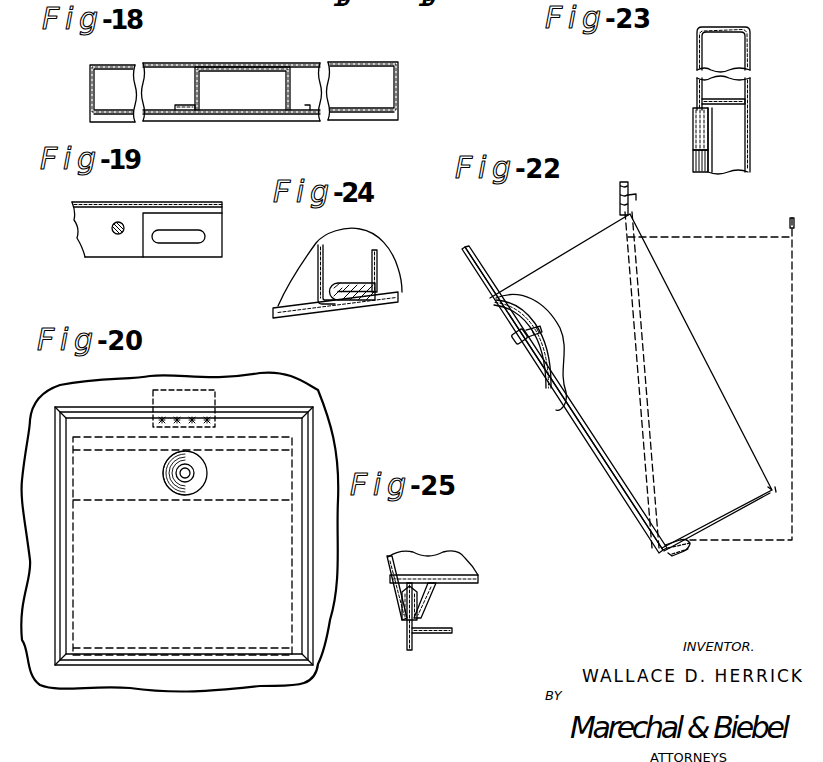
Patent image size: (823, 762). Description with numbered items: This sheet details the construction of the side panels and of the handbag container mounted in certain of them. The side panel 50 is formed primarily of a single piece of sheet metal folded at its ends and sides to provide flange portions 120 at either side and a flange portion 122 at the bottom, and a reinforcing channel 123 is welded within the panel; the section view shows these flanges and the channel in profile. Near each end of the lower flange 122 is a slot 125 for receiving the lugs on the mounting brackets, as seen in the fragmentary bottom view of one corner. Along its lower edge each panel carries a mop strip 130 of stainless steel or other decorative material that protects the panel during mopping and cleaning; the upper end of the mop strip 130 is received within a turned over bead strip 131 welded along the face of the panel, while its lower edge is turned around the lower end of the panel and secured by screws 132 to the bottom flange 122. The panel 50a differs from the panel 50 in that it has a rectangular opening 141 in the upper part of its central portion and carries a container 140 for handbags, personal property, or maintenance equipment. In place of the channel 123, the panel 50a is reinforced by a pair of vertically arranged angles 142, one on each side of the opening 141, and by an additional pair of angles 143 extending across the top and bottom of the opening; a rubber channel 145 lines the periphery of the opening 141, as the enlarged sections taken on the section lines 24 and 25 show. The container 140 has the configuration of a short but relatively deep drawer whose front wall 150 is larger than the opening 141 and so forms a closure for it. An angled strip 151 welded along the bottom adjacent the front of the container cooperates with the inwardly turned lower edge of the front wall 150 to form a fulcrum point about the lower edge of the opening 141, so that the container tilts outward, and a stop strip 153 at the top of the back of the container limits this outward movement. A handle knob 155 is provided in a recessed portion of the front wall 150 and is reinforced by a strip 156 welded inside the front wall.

In FIG. 20, the section line 24 is at (270, 457).
In FIG. 20, the section line 25 is at (252, 716).
In FIG. 18, the side panel 50 is at (382, 53).
In FIG. 19, the side panel 50 is at (215, 236).
In FIG. 24, the panel 50a is at (398, 298).
In FIG. 20, the panel 50a is at (66, 688).
In FIG. 25, the panel 50a is at (413, 652).
In FIG. 23, the panel 50a is at (696, 82).
In FIG. 22, the panel 50a is at (666, 578).
In FIG. 18, the flange portions 120 is at (88, 88).
In FIG. 18, the flange portion at the bottom 122 is at (177, 78).
In FIG. 19, the flange portion at the bottom 122 is at (200, 255).
In FIG. 18, the reinforcing channel 123 is at (250, 67).
In FIG. 19, the slot 125 is at (172, 244).
In FIG. 19, the strip 130 is at (85, 225).
In FIG. 18, the bead strip 131 is at (345, 117).
In FIG. 19, the bead strip 131 is at (188, 200).
In FIG. 19, the screws 132 is at (117, 236).
In FIG. 20, the container 140 is at (274, 398).
In FIG. 25, the container 140 is at (452, 571).
In FIG. 22, the container 140 is at (552, 424).
In FIG. 23, the rectangular opening 141 is at (683, 166).
In FIG. 24, the vertically arranged angles 142 is at (378, 270).
In FIG. 25, the angles 143 is at (446, 635).
In FIG. 23, the angles 143 is at (742, 100).
In FIG. 24, the rubber channel 145 is at (353, 288).
In FIG. 20, the rubber channel 145 is at (316, 660).
In FIG. 25, the rubber channel 145 is at (404, 594).
In FIG. 23, the rubber channel 145 is at (692, 126).
In FIG. 24, the front wall 150 is at (290, 310).
In FIG. 20, the front wall 150 is at (137, 640).
In FIG. 25, the front wall 150 is at (389, 566).
In FIG. 22, the front wall 150 is at (594, 466).
In FIG. 25, the angled strip 151 is at (438, 590).
In FIG. 22, the angled strip 151 is at (680, 548).
In FIG. 20, the stop strip 153 is at (182, 392).
In FIG. 22, the stop strip 153 is at (641, 205).
In FIG. 20, the handle knob 155 is at (186, 481).
In FIG. 22, the handle knob 155 is at (516, 348).
In FIG. 20, the strip 156 is at (148, 502).
In FIG. 22, the strip 156 is at (532, 326).